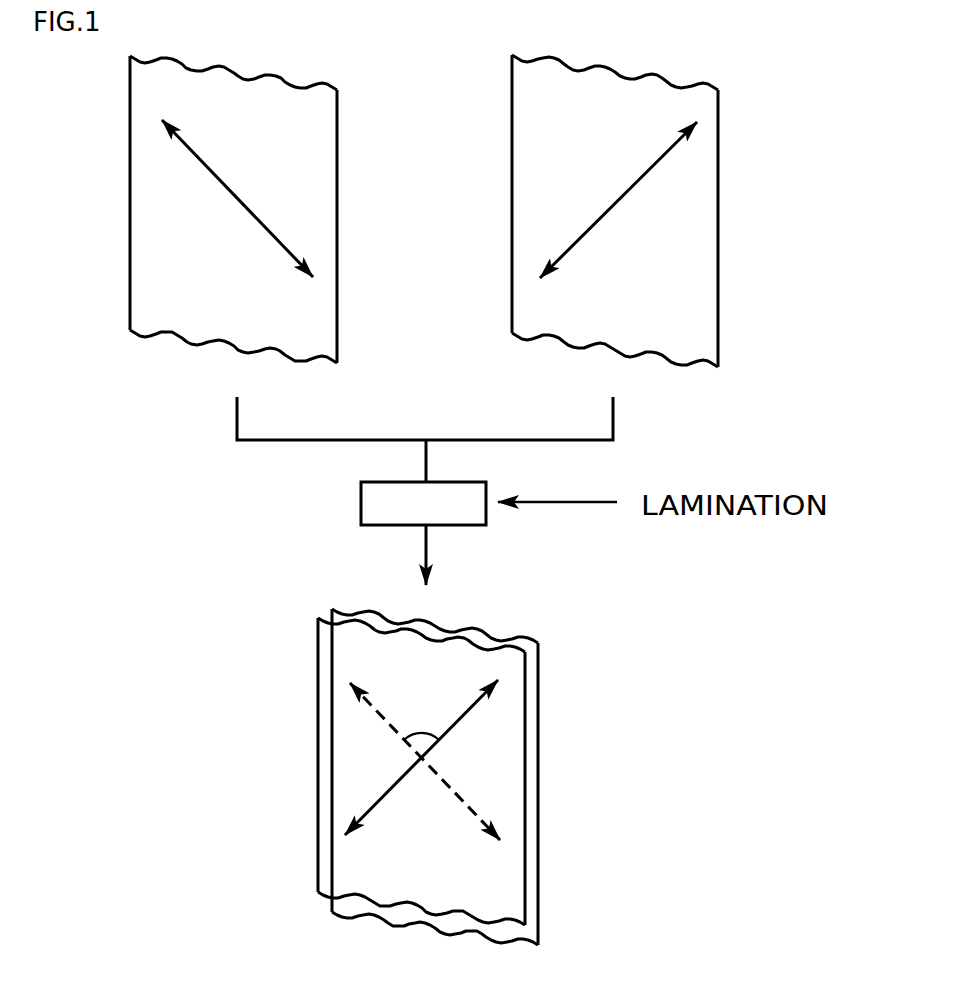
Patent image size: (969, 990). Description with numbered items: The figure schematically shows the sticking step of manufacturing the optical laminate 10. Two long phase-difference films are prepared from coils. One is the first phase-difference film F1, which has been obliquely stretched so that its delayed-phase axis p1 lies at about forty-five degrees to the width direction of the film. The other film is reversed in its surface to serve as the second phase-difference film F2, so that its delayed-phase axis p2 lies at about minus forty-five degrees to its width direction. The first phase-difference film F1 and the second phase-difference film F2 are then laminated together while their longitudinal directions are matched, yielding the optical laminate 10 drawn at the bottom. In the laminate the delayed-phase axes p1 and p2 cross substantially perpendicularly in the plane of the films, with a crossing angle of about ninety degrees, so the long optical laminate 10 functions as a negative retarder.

The first phase-difference film F1 is at (718, 155).
The second phase-difference film F2 is at (130, 155).
The delayed-phase axis p1 is at (521, 474).
The delayed-phase axis p2 is at (331, 476).
The optical laminate 10 is at (553, 658).